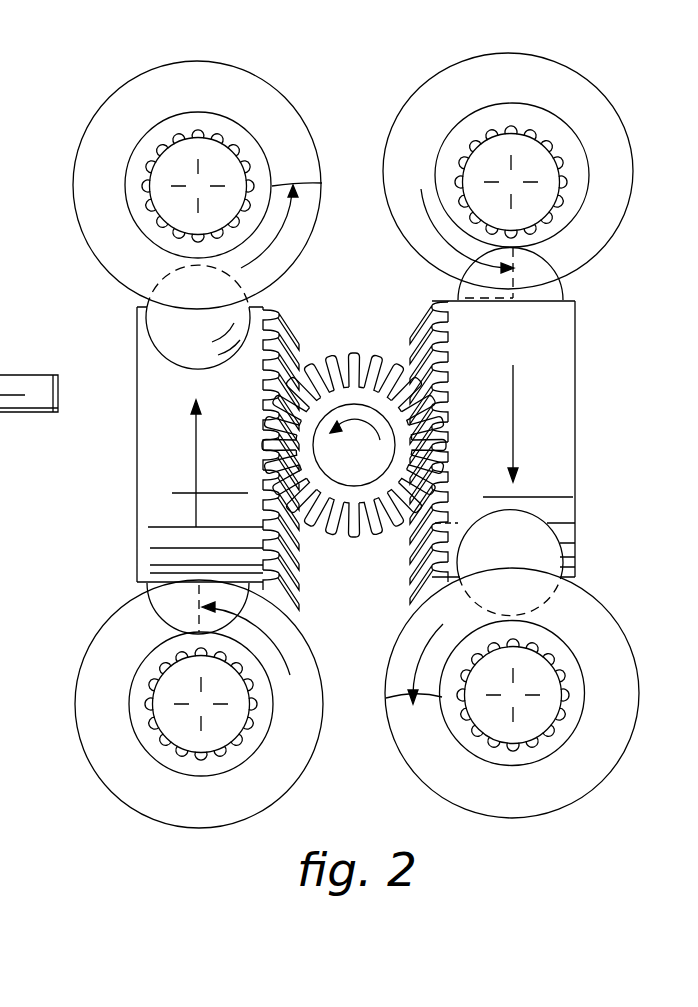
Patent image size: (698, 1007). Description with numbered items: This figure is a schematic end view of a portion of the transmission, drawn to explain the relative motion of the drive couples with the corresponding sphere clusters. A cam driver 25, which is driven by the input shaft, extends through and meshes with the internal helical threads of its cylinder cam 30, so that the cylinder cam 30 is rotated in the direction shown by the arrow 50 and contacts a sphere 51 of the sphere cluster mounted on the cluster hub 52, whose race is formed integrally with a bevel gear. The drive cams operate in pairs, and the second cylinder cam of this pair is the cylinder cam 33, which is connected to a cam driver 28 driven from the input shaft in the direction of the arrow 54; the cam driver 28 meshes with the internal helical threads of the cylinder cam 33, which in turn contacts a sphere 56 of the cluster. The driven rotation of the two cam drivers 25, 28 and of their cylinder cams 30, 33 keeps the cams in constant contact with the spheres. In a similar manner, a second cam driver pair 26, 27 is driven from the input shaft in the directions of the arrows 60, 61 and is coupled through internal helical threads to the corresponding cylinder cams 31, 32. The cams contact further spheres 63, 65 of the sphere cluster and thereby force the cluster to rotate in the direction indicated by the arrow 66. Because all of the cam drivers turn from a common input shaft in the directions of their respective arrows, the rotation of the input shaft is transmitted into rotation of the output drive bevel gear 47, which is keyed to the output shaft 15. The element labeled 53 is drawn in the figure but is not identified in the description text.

The output shaft 15 is at (354, 470).
The cam driver 25 is at (228, 157).
The cam driver 26 is at (548, 190).
The cam driver 27 is at (545, 720).
The cam driver 28 is at (223, 722).
The cylinder cam 30 is at (297, 258).
The cylinder cam 31 is at (602, 123).
The cylinder cam 32 is at (597, 617).
The cylinder cam 33 is at (308, 685).
The output drive bevel gear 47 is at (327, 533).
The arrow 50 is at (283, 228).
The sphere 51 is at (258, 307).
The cluster hub 52 is at (223, 458).
The rack teeth 53 is at (283, 347).
The arrow 54 is at (283, 613).
The sphere 56 is at (160, 597).
The arrow 60 is at (450, 252).
The arrow 61 is at (443, 626).
The sphere 63 is at (548, 288).
The sphere 65 is at (543, 555).
The arrow 66 is at (515, 420).